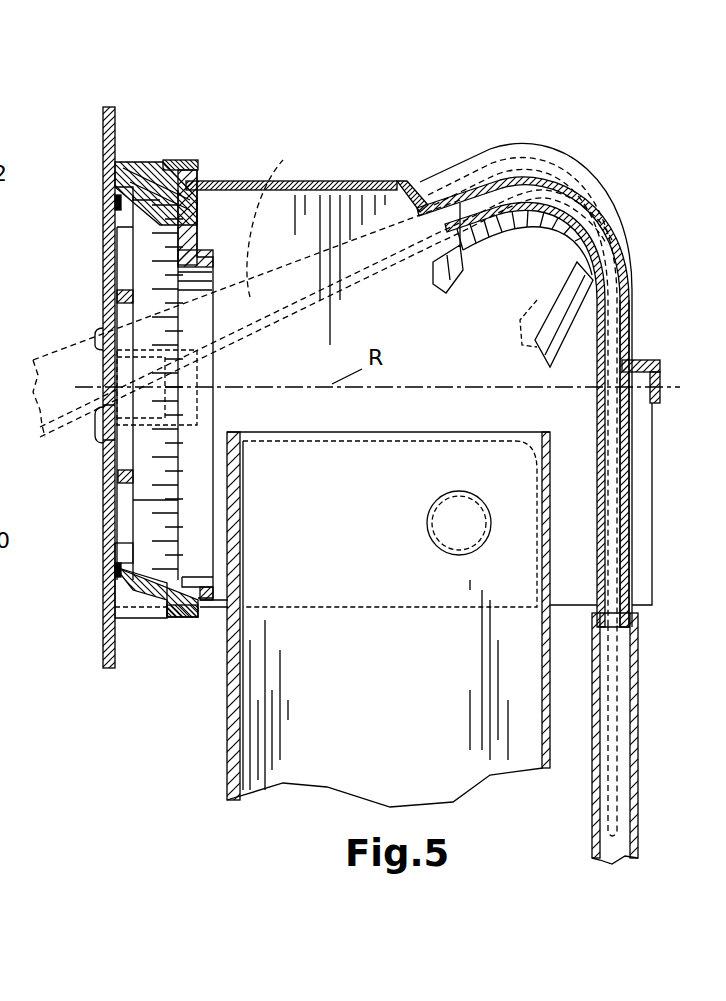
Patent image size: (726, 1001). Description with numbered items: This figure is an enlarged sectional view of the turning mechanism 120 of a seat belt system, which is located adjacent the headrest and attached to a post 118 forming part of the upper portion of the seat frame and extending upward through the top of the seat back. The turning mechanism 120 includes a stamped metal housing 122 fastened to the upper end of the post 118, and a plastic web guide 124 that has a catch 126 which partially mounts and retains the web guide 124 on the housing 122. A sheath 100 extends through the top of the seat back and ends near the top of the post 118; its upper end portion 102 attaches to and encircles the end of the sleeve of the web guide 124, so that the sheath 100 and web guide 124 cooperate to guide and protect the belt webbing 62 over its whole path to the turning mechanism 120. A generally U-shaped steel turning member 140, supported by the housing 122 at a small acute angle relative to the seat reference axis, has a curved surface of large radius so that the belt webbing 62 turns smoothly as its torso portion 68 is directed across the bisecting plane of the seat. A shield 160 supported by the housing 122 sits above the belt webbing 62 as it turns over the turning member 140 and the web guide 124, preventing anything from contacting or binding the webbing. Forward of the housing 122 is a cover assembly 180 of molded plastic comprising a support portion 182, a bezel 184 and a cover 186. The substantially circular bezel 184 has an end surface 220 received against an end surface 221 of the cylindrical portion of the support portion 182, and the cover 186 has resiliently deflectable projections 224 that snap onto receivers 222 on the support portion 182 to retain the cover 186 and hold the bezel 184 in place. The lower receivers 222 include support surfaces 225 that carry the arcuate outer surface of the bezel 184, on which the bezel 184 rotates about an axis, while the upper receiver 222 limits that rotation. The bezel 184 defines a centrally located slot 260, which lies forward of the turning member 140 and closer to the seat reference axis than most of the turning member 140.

The belt webbing 62 is at (631, 331).
The torso portion 68 is at (280, 217).
The sheath 100 is at (638, 718).
The upper end portion 102 is at (638, 628).
The post 118 is at (229, 768).
The turning mechanism 120 is at (568, 147).
The housing 122 is at (582, 347).
The web guide 124 is at (634, 538).
The catch 126 is at (641, 360).
The turning member 140 is at (570, 232).
The shield 160 is at (350, 181).
The cover assembly 180 is at (131, 114).
The support portion 182 is at (188, 160).
The bezel 184 is at (127, 205).
The cover 186 is at (103, 138).
The end surface 220 is at (130, 570).
The end surface 221 is at (135, 502).
The receivers 222 is at (133, 161).
The projections 224 is at (190, 617).
The support surfaces 225 is at (102, 573).
The slot 260 is at (110, 408).